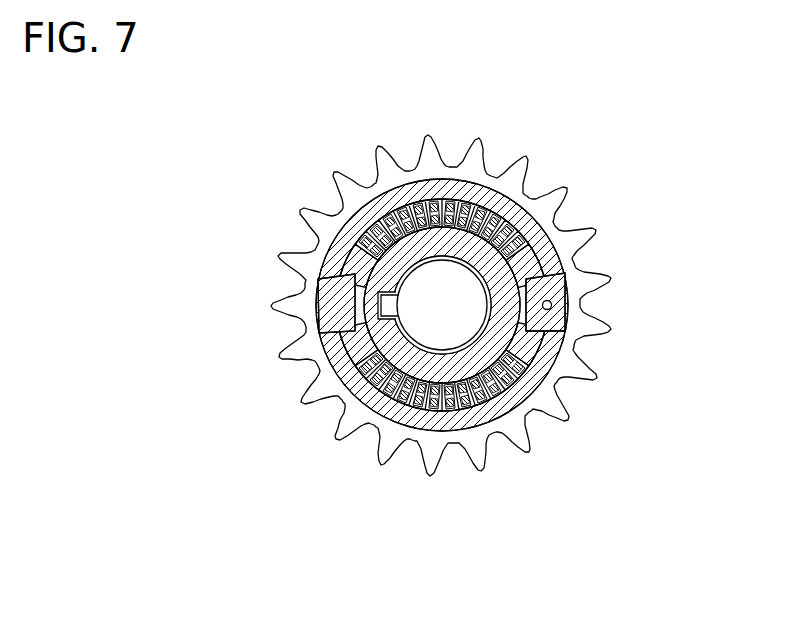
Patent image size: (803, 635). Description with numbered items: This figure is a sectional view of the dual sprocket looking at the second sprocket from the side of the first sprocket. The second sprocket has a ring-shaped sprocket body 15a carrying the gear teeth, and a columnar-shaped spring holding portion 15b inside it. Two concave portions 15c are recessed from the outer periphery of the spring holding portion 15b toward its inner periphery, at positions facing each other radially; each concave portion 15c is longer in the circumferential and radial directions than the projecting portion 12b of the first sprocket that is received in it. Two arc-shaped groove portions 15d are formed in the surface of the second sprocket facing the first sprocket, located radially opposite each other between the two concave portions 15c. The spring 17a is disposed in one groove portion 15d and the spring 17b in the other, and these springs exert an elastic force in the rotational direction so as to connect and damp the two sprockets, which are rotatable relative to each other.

The sprocket body 15a is at (553, 200).
The spring holding portion 15b is at (338, 240).
The concave portions 15c is at (578, 345).
The groove portions 15d is at (423, 197).
The spring 17a is at (493, 200).
The spring 17b is at (530, 410).
The projecting portions 12b is at (577, 263).